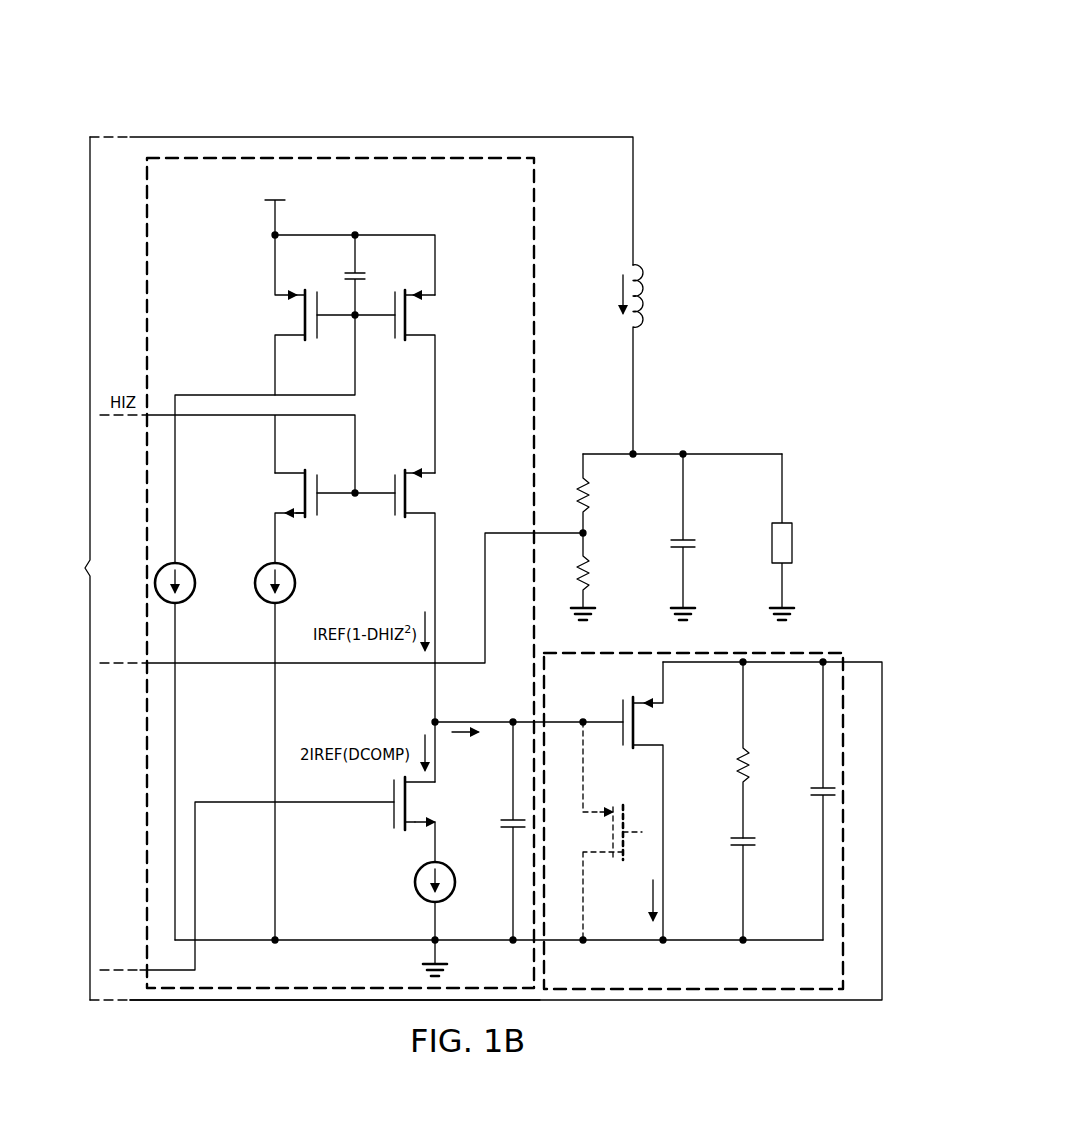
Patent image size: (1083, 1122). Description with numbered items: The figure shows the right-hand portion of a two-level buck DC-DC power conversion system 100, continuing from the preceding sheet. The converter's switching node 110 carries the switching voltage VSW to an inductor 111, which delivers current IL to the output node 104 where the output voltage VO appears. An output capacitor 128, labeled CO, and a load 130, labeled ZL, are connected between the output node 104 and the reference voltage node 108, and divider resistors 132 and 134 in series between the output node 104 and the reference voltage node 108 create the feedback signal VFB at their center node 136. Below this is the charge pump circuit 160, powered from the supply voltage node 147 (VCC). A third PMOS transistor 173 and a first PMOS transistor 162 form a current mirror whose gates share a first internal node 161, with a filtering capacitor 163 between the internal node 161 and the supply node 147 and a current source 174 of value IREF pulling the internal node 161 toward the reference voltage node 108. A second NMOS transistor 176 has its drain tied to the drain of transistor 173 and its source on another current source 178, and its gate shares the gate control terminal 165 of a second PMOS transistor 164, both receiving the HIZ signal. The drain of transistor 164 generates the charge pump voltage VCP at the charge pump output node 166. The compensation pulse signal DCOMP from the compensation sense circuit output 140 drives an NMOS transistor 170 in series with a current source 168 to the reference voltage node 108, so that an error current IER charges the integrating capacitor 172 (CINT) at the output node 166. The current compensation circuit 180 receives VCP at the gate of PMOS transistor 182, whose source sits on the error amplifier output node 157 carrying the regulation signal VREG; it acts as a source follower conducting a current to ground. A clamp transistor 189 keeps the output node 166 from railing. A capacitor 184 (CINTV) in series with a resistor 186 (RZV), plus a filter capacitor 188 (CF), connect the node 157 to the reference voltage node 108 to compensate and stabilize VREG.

The power conversion system 100 is at (685, 62).
The switching node 110 is at (322, 135).
The inductor 111 is at (652, 290).
The output node 104 is at (607, 452).
The divider resistor 132 is at (590, 495).
The divider resistor 134 is at (590, 578).
The center node 136 is at (508, 530).
The output capacitor 128 is at (675, 545).
The load 130 is at (797, 548).
The reference voltage node 108 is at (590, 607).
The charge pump circuit 160 is at (540, 372).
The error amplifier output node 157 is at (325, 1003).
The supply voltage node 147 is at (273, 217).
The third PMOS transistor 173 is at (318, 345).
The first PMOS transistor 162 is at (388, 300).
The filtering capacitor 163 is at (344, 276).
The first internal node 161 is at (357, 358).
The second NMOS transistor 176 is at (318, 470).
The second PMOS transistor 164 is at (388, 470).
The gate control terminal 165 is at (342, 498).
The current source 174 is at (186, 565).
The current source 178 is at (268, 565).
The charge pump output node 166 is at (438, 680).
The compensation sense circuit output 140 is at (250, 805).
The NMOS transistor 170 is at (392, 812).
The current source 168 is at (444, 900).
The integrating capacitor 172 is at (508, 832).
The current compensation circuit 180 is at (718, 650).
The PMOS transistor 182 is at (620, 712).
The PMOS clamp transistor 189 is at (634, 815).
The resistor 186 is at (752, 762).
The capacitor 184 is at (758, 848).
The filter capacitor 188 is at (820, 800).